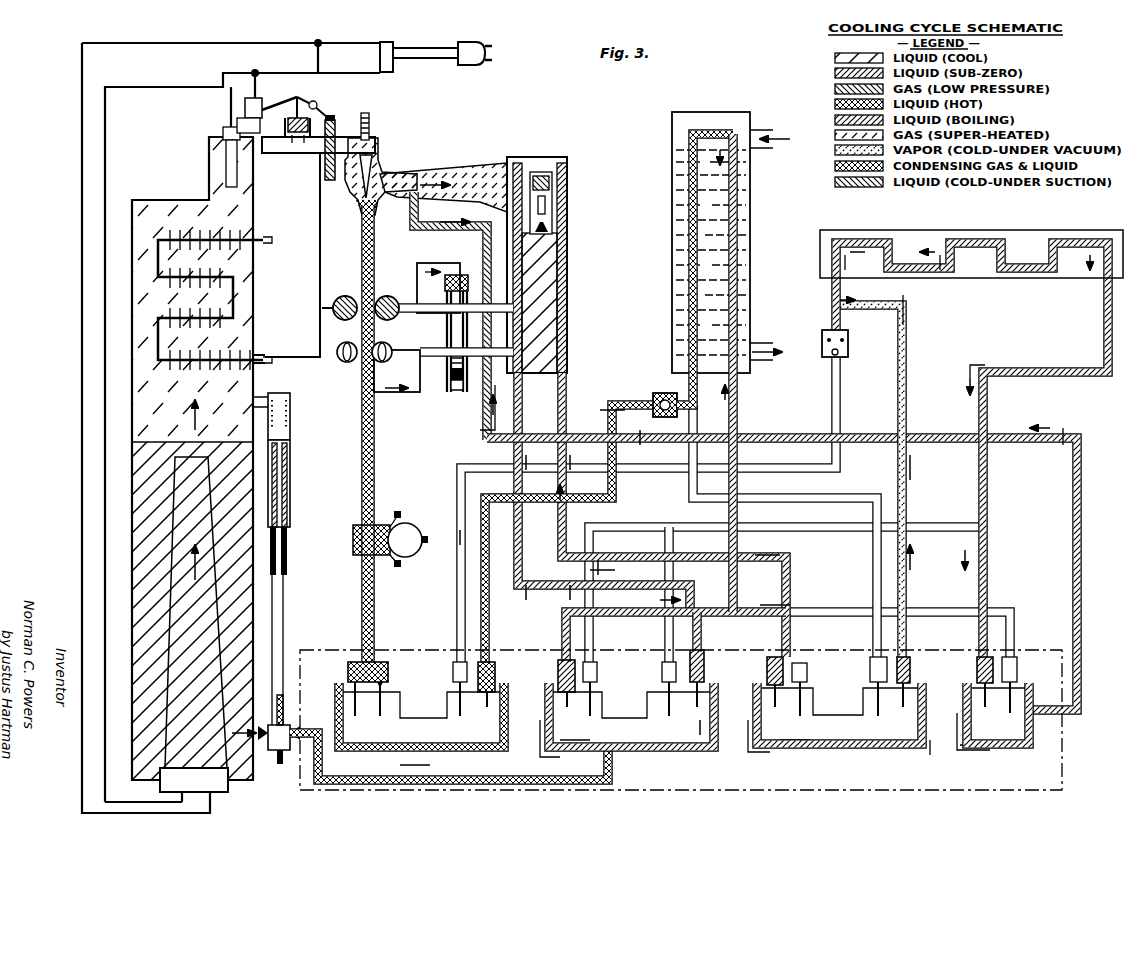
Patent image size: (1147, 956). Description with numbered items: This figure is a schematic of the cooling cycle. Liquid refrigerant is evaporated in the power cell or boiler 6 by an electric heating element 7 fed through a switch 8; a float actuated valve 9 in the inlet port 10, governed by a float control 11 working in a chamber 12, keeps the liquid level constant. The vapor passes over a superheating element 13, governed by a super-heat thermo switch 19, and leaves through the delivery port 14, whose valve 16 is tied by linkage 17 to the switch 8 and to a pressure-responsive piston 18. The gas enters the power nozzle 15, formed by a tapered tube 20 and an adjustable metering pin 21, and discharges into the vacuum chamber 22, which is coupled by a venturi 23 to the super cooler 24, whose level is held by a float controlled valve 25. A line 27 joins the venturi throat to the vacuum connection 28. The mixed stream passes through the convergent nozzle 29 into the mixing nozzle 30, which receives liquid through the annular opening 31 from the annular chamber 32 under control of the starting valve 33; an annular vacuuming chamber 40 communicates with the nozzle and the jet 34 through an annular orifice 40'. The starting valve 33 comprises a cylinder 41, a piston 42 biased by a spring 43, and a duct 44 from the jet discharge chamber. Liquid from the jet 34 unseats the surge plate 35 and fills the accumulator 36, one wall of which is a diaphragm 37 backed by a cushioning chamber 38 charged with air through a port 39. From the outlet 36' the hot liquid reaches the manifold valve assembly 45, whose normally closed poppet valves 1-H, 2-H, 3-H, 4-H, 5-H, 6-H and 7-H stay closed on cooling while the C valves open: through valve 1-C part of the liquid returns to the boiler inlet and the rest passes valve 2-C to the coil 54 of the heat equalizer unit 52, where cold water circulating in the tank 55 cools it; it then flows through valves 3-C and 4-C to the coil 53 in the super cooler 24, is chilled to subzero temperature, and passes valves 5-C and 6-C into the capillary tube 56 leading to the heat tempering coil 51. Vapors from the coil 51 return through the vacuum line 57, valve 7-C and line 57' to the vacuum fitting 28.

The power cell or boiler 6 is at (128, 519).
The electric heating element 7 is at (165, 648).
The switch 8 is at (258, 101).
The float actuated valve 9 is at (288, 726).
The inlet port 10 is at (275, 758).
The float control 11 is at (291, 427).
The chamber 12 is at (291, 473).
The superheating element 13 is at (243, 312).
The delivery port 14 is at (292, 167).
The power nozzle 15 is at (369, 152).
The valve 16 is at (335, 182).
The linkage 17 is at (300, 92).
The piston 18 is at (306, 142).
The super-heat thermo switch 19 is at (226, 130).
The elongated tube 20 is at (380, 182).
The metering pin 21 is at (372, 167).
The vacuum chamber 22 is at (358, 196).
The venturi 23 is at (428, 178).
The super cooler 24 is at (556, 160).
The float controlled valve 25 is at (548, 213).
The line 27 is at (416, 231).
The vacuum connection 28 is at (490, 360).
The nozzle 29 is at (384, 298).
The mixing nozzle 30 is at (383, 343).
The annular opening 31 is at (350, 300).
The annular chamber 32 is at (333, 310).
The starting valve assembly 33 is at (455, 396).
The jet 34 is at (362, 380).
The surge plate or spring loaded valve 35 is at (354, 540).
The pressure chamber or accumulator 36 is at (400, 505).
The outlet of accumulator chamber 36' is at (351, 610).
The yieldable diaphragm 37 is at (398, 568).
The cushioning chamber 38 is at (416, 530).
The port 39 is at (427, 543).
The annular vacuuming chamber 40 is at (443, 371).
The annular orifice 40' is at (334, 360).
The cylinder 41 is at (446, 388).
The piston 42 is at (447, 362).
The spring 43 is at (465, 394).
The duct 44 is at (440, 267).
The manifold valve assembly 45 is at (312, 802).
The heat tempering coil or heat exchanger 51 is at (983, 240).
The heat equalizer unit 52 is at (738, 112).
The coil in super cooler 53 is at (568, 300).
The coil 54 is at (738, 300).
The tank 55 is at (753, 228).
The capillary tube 56 is at (905, 420).
The vacuum line 57 is at (972, 450).
The line 57' is at (803, 569).
The manifold valve 1-C is at (350, 673).
The manifold valve 1-H is at (384, 682).
The manifold valve 2-H is at (454, 676).
The manifold valve 2-C is at (494, 672).
The manifold valve 3-C is at (560, 673).
The manifold valve 3-H is at (592, 674).
The manifold valve 4-H is at (662, 672).
The manifold valve 4-C is at (704, 672).
The manifold valve 5-C is at (768, 672).
The manifold valve 5-H is at (802, 672).
The manifold valve 6-H is at (872, 672).
The manifold valve 6-C is at (909, 672).
The manifold valve 7-C is at (978, 672).
The manifold valve 7-H is at (1017, 668).